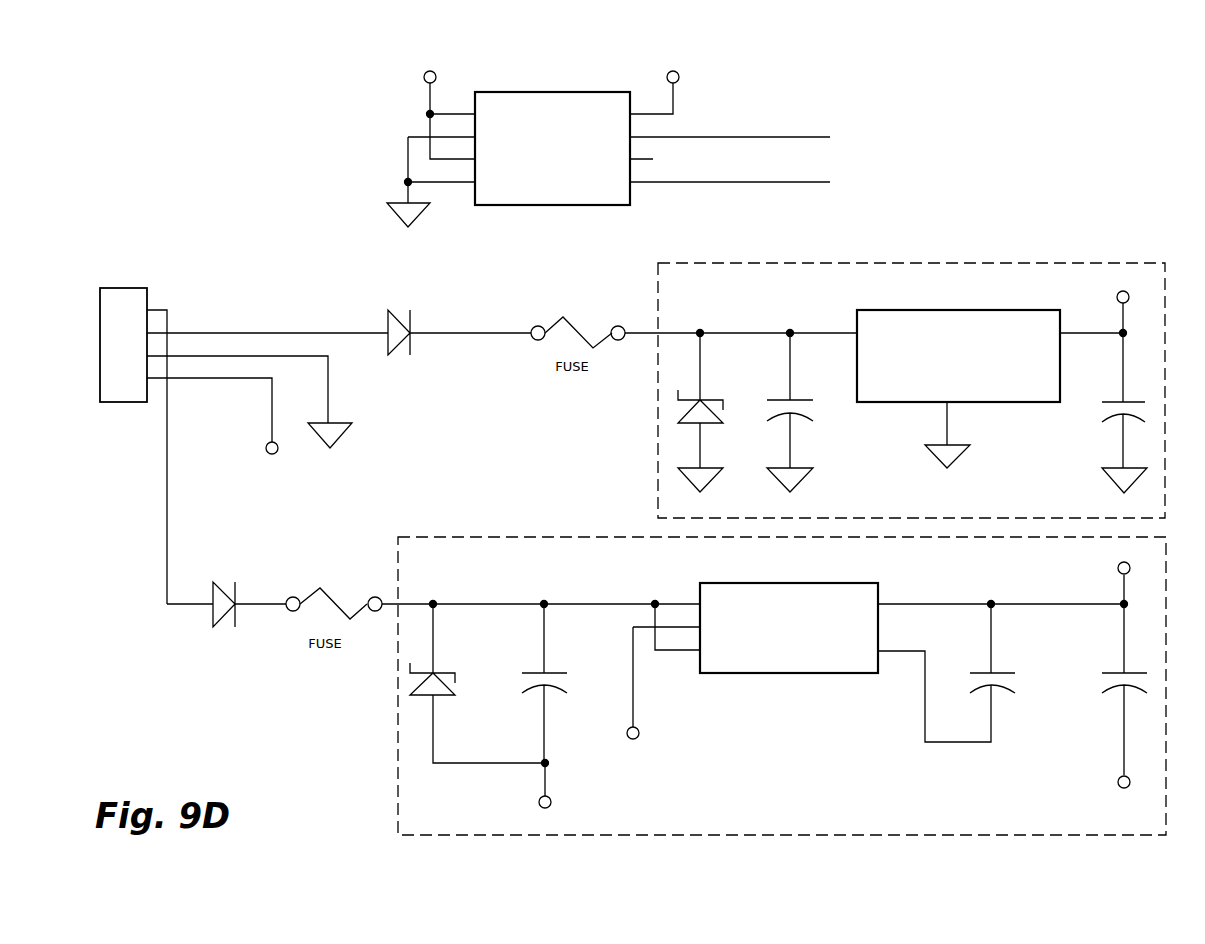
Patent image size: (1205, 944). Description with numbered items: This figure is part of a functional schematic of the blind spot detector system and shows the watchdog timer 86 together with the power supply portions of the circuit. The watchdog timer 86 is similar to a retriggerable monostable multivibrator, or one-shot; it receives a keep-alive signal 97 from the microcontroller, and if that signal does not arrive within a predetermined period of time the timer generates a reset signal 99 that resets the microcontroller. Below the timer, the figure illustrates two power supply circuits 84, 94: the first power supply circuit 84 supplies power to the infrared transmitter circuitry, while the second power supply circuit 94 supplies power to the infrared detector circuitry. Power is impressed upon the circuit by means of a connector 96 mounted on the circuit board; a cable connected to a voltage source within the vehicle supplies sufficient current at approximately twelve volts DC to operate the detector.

The power supply circuit 84 is at (907, 262).
The watchdog timer 86 is at (550, 205).
The power supply circuit 94 is at (398, 752).
The connector 96 is at (123, 402).
The keep-alive signal 97 is at (810, 138).
The reset signal 99 is at (810, 183).